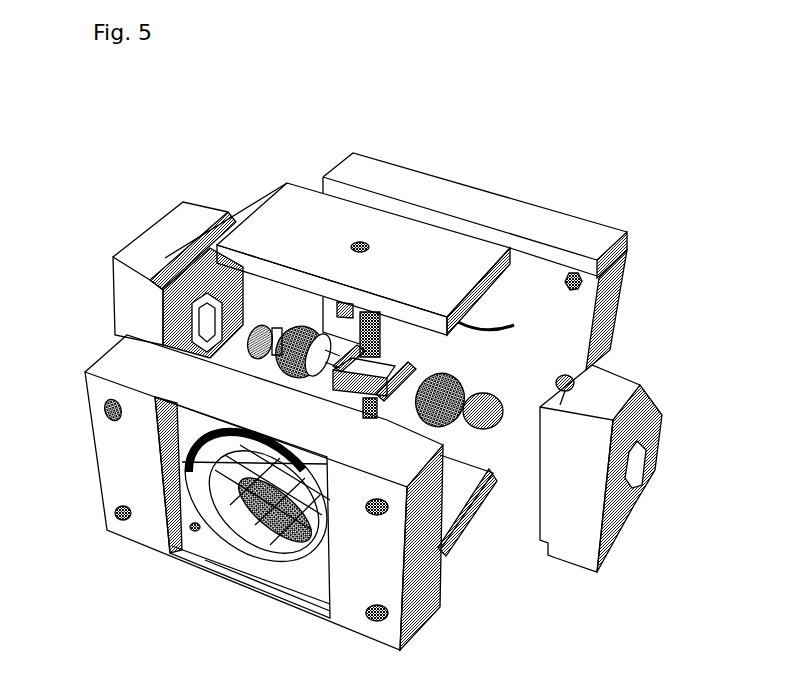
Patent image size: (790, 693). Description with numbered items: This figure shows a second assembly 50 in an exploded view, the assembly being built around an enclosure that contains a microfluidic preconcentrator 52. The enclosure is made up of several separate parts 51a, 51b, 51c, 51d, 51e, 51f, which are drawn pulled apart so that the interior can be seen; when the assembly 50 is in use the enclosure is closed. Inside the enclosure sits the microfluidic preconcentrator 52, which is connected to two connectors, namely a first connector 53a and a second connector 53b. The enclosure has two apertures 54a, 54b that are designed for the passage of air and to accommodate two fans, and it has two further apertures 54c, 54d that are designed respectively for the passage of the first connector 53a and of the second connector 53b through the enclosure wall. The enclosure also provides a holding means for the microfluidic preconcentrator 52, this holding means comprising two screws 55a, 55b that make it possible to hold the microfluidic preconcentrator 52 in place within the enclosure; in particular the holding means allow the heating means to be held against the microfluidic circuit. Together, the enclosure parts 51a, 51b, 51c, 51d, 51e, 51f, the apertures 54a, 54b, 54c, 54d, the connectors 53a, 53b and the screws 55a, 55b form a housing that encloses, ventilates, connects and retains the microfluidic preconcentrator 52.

The second assembly 50 is at (260, 165).
The enclosure part 51a is at (270, 215).
The enclosure part 51b is at (150, 238).
The enclosure part 51c is at (114, 438).
The enclosure part 51d is at (466, 493).
The enclosure part 51e is at (550, 213).
The enclosure part 51f is at (640, 362).
The microfluidic preconcentrator 52 is at (390, 367).
The first connector 53a is at (240, 354).
The second connector 53b is at (473, 377).
The aperture 54a is at (125, 512).
The aperture 54b is at (580, 280).
The aperture 54c is at (201, 318).
The aperture 54d is at (639, 453).
The screw 55a is at (265, 360).
The screw 55b is at (390, 405).